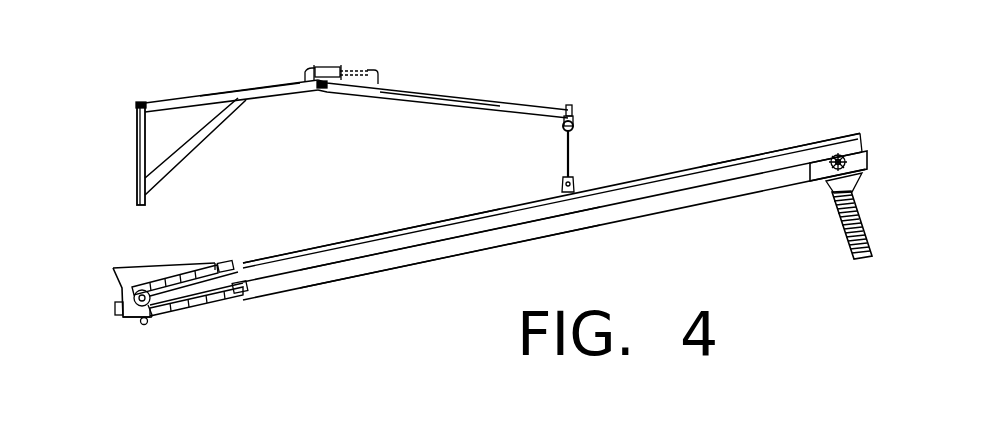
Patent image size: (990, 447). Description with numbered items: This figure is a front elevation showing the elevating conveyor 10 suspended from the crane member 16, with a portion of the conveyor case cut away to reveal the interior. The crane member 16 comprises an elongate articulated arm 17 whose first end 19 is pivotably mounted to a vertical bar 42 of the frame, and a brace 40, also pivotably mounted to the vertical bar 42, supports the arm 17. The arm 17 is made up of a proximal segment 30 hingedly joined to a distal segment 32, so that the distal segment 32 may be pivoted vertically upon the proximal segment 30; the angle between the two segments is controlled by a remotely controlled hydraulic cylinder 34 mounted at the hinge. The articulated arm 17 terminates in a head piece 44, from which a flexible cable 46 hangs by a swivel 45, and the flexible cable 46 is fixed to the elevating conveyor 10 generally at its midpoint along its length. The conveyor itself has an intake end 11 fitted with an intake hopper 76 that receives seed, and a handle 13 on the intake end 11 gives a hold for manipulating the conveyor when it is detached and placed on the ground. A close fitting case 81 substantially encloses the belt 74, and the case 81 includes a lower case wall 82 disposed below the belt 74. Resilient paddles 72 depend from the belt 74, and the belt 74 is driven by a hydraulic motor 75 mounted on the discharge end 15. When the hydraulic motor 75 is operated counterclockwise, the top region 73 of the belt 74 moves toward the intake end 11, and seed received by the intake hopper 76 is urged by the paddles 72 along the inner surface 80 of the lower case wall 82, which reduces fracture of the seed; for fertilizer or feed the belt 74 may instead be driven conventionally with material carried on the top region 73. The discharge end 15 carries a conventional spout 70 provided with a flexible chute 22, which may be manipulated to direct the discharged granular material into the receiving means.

The elevating conveyor 10 is at (612, 218).
The intake end 11 is at (163, 313).
The handle 13 is at (115, 310).
The discharge end 15 is at (755, 154).
The crane member 16 is at (310, 81).
The articulated arm 17 is at (392, 87).
The first end 19 is at (137, 103).
The flexible chute 22 is at (866, 214).
The proximal segment 30 is at (248, 98).
The distal segment 32 is at (410, 100).
The hydraulic cylinder 34 is at (312, 72).
The brace 40 is at (190, 143).
The vertical bar 42 is at (137, 156).
The head piece 44 is at (576, 110).
The swivel 45 is at (576, 126).
The flexible cable 46 is at (572, 168).
The spout 70 is at (858, 180).
The resilient paddles 72 is at (205, 257).
The top region 73 is at (168, 278).
The belt 74 is at (195, 305).
The hydraulic motor 75 is at (848, 160).
The intake hopper 76 is at (130, 275).
The inner surface 80 is at (302, 250).
The case 81 is at (348, 277).
The lower case wall 82 is at (457, 245).